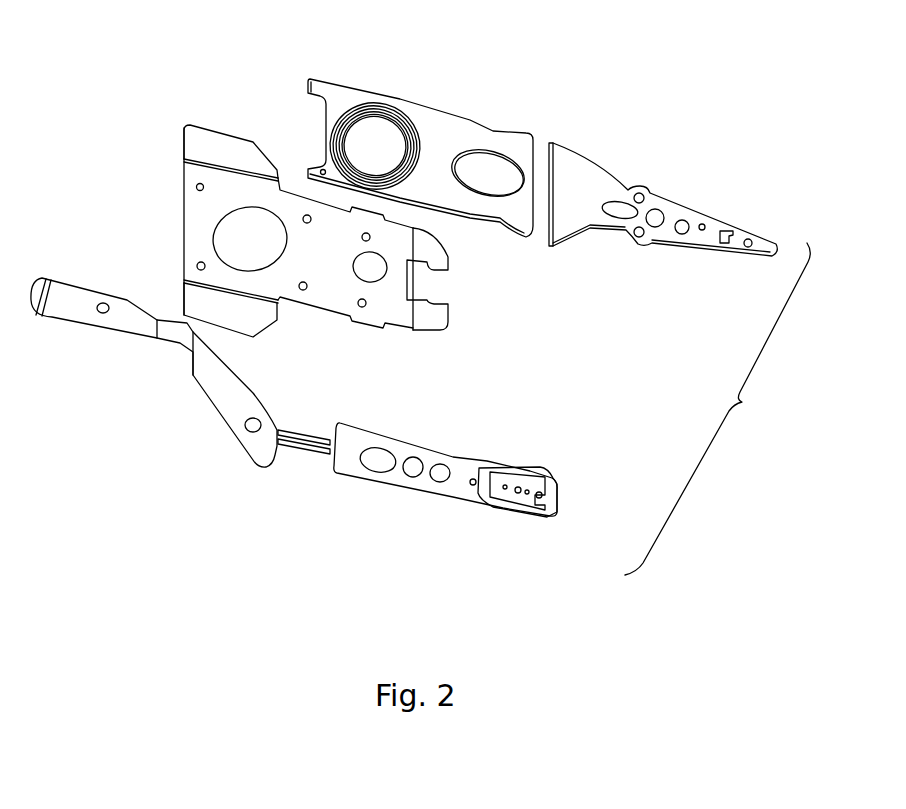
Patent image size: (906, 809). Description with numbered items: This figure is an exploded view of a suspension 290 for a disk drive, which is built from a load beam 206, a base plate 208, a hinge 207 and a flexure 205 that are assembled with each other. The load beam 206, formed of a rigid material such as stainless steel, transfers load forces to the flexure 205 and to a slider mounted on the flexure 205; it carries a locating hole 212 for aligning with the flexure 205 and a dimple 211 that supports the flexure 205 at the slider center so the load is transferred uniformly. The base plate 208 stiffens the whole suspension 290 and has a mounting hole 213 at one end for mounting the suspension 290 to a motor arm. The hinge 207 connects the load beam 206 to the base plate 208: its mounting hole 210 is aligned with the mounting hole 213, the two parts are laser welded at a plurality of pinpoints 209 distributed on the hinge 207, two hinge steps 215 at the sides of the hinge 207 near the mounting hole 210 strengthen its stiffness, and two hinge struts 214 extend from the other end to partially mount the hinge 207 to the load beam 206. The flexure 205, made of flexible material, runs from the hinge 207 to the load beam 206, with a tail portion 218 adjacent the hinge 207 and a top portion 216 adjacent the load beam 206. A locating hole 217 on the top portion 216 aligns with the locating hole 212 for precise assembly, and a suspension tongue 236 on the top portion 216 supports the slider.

The flexure 205 is at (348, 450).
The load beam 206 is at (577, 188).
The hinge 207 is at (380, 303).
The base plate 208 is at (445, 140).
The pinpoints 209 is at (197, 185).
The mounting hole 210 is at (227, 230).
The dimple 211 is at (748, 242).
The locating hole 212 is at (657, 220).
The mounting hole 213 is at (370, 150).
The hinge struts 214 is at (437, 250).
The hinge steps 215 is at (195, 138).
The top portion 216 is at (493, 503).
The locating hole 217 is at (412, 470).
The tail portion 218 is at (83, 302).
The suspension tongue 236 is at (522, 490).
The suspension 290 is at (717, 409).